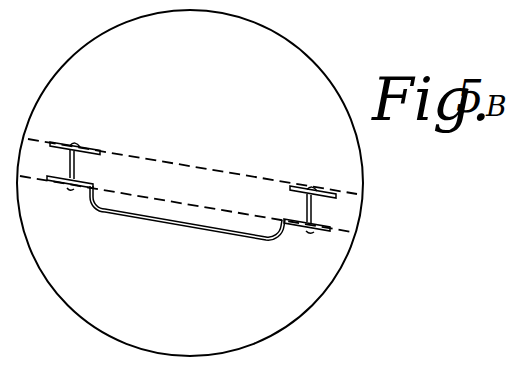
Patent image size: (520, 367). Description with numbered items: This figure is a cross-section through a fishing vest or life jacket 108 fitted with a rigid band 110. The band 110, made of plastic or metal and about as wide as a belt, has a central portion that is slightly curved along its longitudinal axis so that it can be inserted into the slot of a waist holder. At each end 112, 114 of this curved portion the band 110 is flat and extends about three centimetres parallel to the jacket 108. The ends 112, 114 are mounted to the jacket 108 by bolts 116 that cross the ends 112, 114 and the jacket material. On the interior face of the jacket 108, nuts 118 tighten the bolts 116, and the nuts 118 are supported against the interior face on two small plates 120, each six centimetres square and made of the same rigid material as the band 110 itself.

The life jacket 108 is at (200, 187).
The band 110 is at (177, 229).
The end 112 is at (82, 189).
The end 114 is at (317, 233).
The bolts 116 is at (68, 184).
The nuts 118 is at (75, 144).
The plates 120 is at (92, 148).